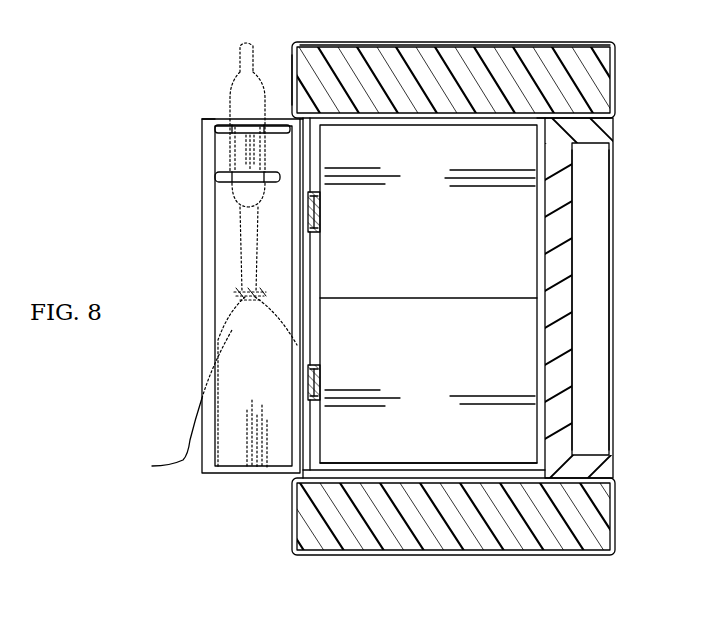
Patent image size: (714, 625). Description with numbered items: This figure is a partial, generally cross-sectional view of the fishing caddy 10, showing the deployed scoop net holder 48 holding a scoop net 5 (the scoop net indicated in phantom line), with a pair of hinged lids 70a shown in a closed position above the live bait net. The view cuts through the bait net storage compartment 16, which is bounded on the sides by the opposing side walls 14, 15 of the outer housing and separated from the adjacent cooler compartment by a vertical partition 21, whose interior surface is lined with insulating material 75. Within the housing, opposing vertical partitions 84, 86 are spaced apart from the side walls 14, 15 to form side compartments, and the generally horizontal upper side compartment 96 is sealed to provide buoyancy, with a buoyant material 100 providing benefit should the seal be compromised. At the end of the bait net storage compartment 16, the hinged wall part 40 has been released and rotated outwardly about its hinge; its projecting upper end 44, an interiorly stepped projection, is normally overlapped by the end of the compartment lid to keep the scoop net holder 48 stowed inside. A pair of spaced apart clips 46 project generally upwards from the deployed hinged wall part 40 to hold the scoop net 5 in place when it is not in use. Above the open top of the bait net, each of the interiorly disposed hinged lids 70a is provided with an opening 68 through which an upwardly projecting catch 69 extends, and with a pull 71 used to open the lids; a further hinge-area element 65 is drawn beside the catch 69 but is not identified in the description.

The light beam / illumination path 5 is at (178, 407).
The fishing caddy 10 is at (224, 38).
The side wall 14 is at (428, 562).
The side wall 15 is at (446, 44).
The storage compartment 16 is at (506, 447).
The vertical partition 21 is at (578, 262).
The hinged wall part 40 is at (227, 272).
The projecting upper end 44 is at (202, 404).
The clips 46 is at (232, 126).
The scoop net holder 48 is at (228, 233).
The hinge pin 65 is at (322, 232).
The opening 68 is at (317, 370).
The catch 69 is at (322, 213).
The hinged lids 70a is at (488, 234).
The pull 71 is at (322, 198).
The insulating material 75 is at (594, 298).
The vertical partition 84 is at (445, 468).
The vertical partition 86 is at (436, 126).
The upper side compartment 96 is at (556, 548).
The buoyant material 100 is at (588, 44).